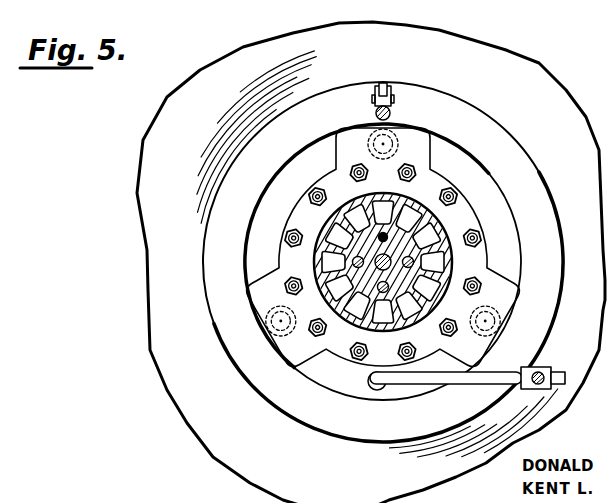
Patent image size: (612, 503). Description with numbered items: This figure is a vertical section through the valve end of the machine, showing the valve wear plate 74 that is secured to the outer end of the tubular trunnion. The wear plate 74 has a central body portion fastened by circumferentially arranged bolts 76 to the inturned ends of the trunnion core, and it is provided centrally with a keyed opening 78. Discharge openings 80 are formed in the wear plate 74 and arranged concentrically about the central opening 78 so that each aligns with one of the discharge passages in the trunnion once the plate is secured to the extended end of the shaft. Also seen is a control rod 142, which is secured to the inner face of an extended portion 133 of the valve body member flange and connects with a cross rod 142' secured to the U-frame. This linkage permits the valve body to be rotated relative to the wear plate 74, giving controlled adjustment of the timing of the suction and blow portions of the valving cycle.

The valve wear plate 74 is at (430, 177).
The bolts 76 is at (426, 263).
The keyed opening 78 is at (431, 236).
The discharge openings 80 is at (423, 287).
The extended portion 133 is at (368, 386).
The control rod 142 is at (446, 394).
The cross rod 142' is at (554, 367).